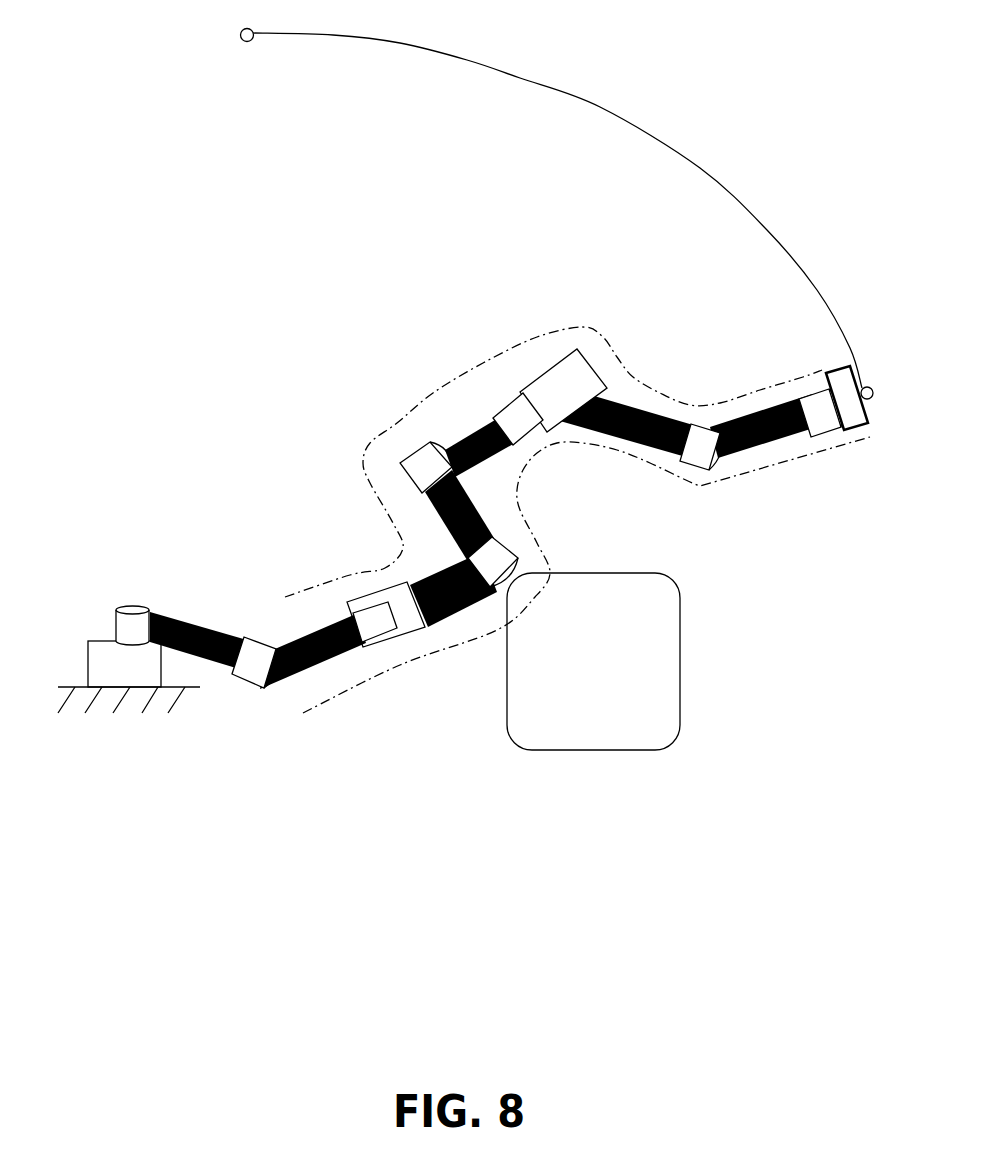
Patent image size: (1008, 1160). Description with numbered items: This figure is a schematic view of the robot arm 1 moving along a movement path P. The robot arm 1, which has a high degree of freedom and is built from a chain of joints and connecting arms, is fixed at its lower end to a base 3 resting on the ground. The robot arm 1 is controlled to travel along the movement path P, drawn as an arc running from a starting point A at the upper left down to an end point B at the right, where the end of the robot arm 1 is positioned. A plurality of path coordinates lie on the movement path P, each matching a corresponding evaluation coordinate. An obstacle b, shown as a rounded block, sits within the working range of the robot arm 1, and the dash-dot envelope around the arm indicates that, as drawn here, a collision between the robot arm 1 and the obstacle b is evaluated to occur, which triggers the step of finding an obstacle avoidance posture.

The robot arm 1 is at (803, 490).
The base 3 is at (98, 665).
The start point A is at (238, 22).
The end point B is at (878, 404).
The movement path P is at (705, 166).
The obstacle b is at (680, 675).